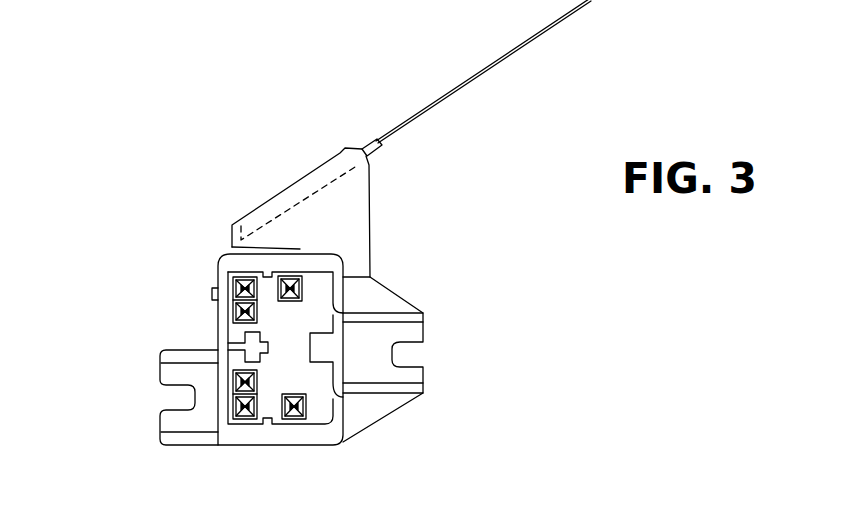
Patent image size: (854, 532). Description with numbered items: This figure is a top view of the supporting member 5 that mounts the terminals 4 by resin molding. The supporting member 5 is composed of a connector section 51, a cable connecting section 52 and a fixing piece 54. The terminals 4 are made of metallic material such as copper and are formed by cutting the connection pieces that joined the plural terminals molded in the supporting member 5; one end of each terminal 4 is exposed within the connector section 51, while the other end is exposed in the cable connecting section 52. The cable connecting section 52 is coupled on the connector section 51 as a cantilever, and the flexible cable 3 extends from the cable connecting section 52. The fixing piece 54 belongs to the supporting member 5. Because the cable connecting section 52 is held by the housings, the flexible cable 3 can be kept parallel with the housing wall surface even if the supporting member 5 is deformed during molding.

The flexible cable 3 is at (471, 81).
The terminals 4 is at (291, 279).
The supporting member 5 is at (326, 449).
The connector section 51 is at (296, 437).
The cable connecting section 52 is at (362, 218).
The fixing piece 54 is at (160, 372).